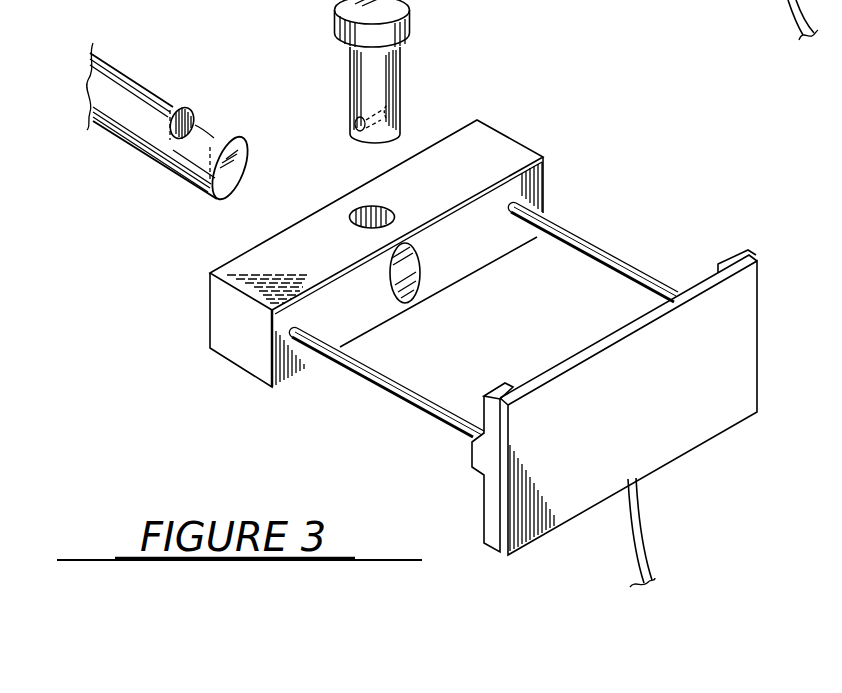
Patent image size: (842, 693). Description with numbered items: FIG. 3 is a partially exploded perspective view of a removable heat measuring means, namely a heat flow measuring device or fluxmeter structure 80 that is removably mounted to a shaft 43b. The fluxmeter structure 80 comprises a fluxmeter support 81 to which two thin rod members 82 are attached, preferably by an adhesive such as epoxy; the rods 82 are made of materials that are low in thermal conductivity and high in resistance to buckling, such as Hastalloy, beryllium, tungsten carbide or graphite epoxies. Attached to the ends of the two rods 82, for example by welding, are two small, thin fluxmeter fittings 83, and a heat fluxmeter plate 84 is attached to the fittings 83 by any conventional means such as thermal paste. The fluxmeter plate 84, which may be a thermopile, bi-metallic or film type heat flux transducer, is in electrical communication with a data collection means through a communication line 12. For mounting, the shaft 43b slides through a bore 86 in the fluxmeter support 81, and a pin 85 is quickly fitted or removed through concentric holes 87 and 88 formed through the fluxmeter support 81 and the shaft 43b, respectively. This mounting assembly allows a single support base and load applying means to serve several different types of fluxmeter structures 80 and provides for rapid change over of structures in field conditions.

The communication line 12 is at (645, 527).
The shaft 43b is at (136, 112).
The fluxmeter structure 80 is at (609, 190).
The fluxmeter support 81 is at (491, 155).
The rod members 82 is at (622, 258).
The fluxmeter fittings 83 is at (723, 262).
The heat fluxmeter plate 84 is at (697, 412).
The pin 85 is at (351, 77).
The bore 86 is at (408, 270).
The hole 87 is at (378, 210).
The hole 88 is at (186, 122).